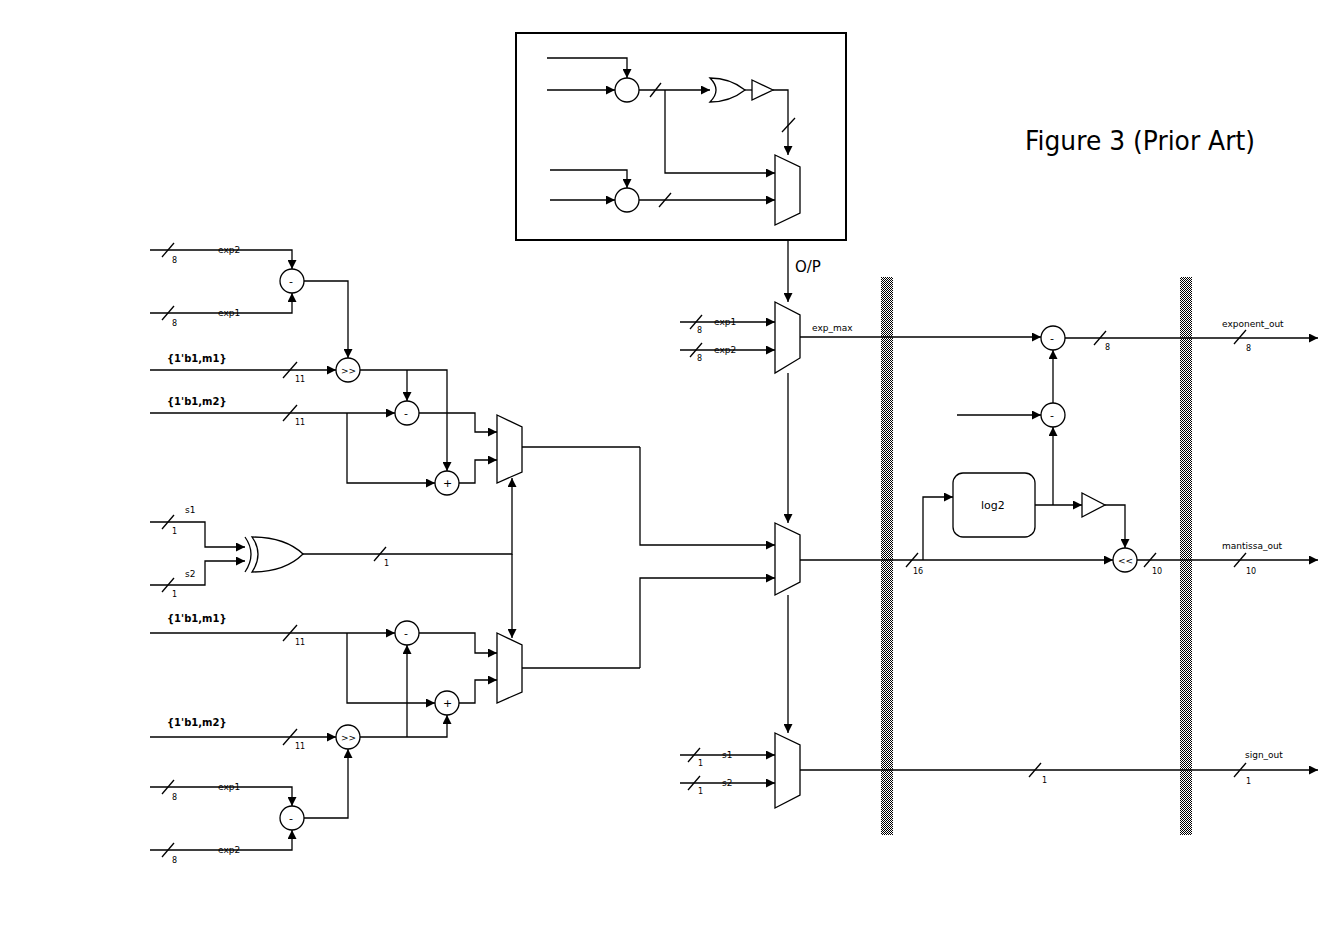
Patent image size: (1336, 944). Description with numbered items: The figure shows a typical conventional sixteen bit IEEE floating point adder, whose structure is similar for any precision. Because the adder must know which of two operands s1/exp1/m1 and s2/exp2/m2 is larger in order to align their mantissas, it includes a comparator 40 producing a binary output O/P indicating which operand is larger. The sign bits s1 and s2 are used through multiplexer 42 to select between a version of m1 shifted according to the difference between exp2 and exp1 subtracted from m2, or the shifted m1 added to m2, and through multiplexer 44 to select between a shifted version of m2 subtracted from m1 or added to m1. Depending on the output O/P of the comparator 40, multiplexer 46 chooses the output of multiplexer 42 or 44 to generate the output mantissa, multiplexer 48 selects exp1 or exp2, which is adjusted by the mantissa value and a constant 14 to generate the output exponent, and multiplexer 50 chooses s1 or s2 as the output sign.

The comparator 40 is at (697, 136).
The multiplexer 42 is at (512, 439).
The multiplexer 44 is at (511, 679).
The multiplexer 46 is at (799, 555).
The multiplexer 48 is at (798, 335).
The multiplexer 50 is at (795, 775).
The normalization bias constant 14 is at (999, 405).